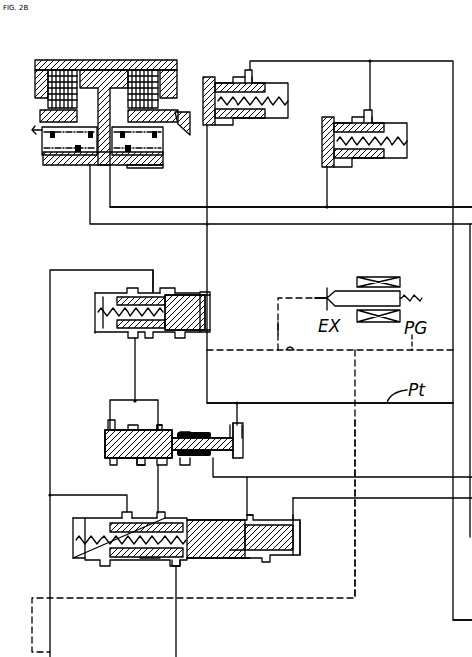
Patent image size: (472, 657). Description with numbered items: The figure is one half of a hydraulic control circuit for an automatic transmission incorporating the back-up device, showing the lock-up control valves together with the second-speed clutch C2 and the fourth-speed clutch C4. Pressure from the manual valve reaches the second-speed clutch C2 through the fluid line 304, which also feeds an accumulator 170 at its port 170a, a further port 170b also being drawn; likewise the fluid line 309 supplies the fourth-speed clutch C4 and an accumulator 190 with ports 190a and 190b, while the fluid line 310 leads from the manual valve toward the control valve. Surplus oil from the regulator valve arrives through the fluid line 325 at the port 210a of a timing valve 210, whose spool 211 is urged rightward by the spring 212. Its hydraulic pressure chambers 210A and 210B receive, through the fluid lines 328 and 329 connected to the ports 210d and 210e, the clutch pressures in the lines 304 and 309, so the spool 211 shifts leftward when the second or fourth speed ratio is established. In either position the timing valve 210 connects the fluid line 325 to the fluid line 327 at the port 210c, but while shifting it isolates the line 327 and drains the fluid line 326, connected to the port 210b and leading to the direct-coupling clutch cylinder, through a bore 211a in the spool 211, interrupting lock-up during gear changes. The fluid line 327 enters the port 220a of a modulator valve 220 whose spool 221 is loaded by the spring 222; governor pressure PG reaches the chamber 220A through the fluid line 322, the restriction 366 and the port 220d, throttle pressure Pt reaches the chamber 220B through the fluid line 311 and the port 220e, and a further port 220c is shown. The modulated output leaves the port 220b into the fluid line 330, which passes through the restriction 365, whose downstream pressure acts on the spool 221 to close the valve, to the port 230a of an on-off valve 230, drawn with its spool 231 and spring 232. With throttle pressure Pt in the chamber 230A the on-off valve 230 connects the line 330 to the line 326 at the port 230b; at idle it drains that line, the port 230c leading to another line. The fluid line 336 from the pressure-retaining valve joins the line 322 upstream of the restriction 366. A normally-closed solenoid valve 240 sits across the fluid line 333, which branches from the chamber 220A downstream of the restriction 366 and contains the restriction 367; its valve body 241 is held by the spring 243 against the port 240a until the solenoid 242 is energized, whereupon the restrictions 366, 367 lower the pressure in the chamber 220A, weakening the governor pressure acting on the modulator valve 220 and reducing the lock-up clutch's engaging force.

The second-speed clutch C2 is at (44, 157).
The fourth-speed clutch C4 is at (172, 148).
The accumulator 170 is at (262, 127).
The port of accumulator 170a is at (208, 133).
The accumulator port 170b is at (247, 62).
The accumulator 190 is at (405, 165).
The port of accumulator 190a is at (328, 172).
The accumulator port 190b is at (371, 112).
The fluid line 309 is at (262, 194).
The fluid line 304 is at (250, 226).
The fluid line 311 is at (440, 405).
The fluid line 310 is at (470, 611).
The fluid line 322 is at (382, 352).
The restriction 366 is at (294, 362).
The fluid line 336 is at (360, 450).
The fluid line 328 is at (367, 477).
The fluid line 329 is at (393, 500).
The fluid line 326 is at (50, 385).
The solenoid valve 240 is at (405, 283).
The port of solenoid valve 240a is at (315, 298).
The valve body 241 is at (347, 290).
The solenoid 242 is at (378, 277).
The spring 243 is at (418, 295).
The fluid line 333 is at (278, 298).
The on-off valve 230 is at (180, 283).
The valve spool 231 is at (190, 300).
The valve spring 232 is at (98, 302).
The port of on-off valve 230a is at (130, 336).
The port of on-off valve 230b is at (157, 290).
The hydraulic pressure chamber 230A is at (235, 298).
The port of on-off valve 230c is at (211, 338).
The restriction 367 is at (275, 322).
The fluid line 330 is at (135, 362).
The restriction 365 is at (101, 408).
The modulator valve 220 is at (247, 452).
The spool 221 is at (110, 448).
The port of modulator valve 220a is at (135, 463).
The port of modulator valve 220b is at (108, 426).
The valve port 220c is at (160, 423).
The port of modulator valve 220d is at (183, 430).
The port of modulator valve 220e is at (236, 428).
The hydraulic pressure chamber 220A is at (181, 489).
The hydraulic pressure chamber 220B is at (245, 440).
The timing valve 210 is at (290, 558).
The spool 211 is at (237, 555).
The bore 211a is at (150, 558).
The spring 212 is at (100, 545).
The port of timing valve 210a is at (197, 558).
The port of timing valve 210b is at (125, 520).
The port of timing valve 210c is at (179, 508).
The port of timing valve 210d is at (314, 500).
The port of timing valve 210e is at (293, 520).
The hydraulic pressure chamber 210A is at (240, 558).
The hydraulic pressure chamber 210B is at (297, 550).
The spring 222 is at (248, 516).
The fluid line 327 is at (246, 500).
The fluid line 325 is at (176, 618).